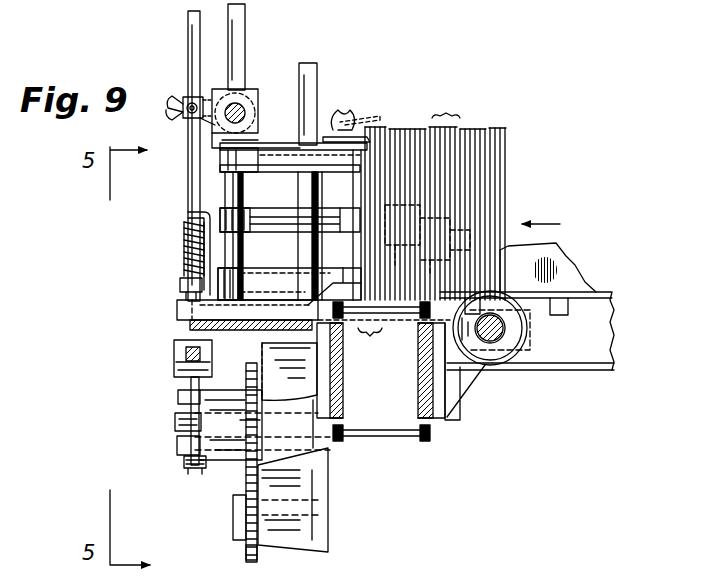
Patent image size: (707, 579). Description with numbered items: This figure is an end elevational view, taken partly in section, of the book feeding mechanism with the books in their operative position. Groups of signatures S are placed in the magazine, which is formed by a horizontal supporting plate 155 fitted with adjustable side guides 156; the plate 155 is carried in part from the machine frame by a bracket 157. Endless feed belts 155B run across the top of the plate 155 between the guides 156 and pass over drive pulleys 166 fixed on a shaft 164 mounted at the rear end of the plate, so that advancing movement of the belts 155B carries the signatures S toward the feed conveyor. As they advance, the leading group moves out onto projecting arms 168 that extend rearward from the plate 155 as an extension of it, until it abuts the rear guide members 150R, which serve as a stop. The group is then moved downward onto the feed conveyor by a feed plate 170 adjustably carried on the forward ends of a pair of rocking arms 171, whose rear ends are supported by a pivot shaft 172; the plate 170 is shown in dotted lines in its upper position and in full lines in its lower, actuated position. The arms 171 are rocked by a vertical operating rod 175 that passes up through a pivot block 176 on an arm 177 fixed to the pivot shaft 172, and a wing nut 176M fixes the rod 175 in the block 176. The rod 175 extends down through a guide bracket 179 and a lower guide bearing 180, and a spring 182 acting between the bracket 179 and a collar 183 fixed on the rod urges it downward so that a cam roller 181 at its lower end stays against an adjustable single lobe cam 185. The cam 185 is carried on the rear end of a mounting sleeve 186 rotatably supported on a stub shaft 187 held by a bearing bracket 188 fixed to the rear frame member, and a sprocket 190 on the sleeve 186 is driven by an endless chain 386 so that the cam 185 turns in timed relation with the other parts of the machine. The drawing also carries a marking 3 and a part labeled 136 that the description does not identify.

The vertical operating rod 175 is at (188, 40).
The pivot shaft 172 is at (240, 100).
The pivot block 176 is at (184, 97).
The arm 177 is at (205, 97).
The wing nut 176M is at (176, 116).
The rocking arms 171 is at (279, 140).
The feed plate 170 is at (362, 120).
The rear guide members 150R is at (352, 172).
The guide bracket 179 is at (186, 212).
The spring 182 is at (186, 246).
The collar 183 is at (178, 284).
The lower guide bearing 180 is at (176, 306).
The signatures S is at (495, 124).
The section indicator 3 is at (409, 224).
The horizontal supporting plate 155 is at (608, 296).
The endless feed belts 155B is at (540, 370).
The adjustable side guides 156 is at (552, 270).
The drive pulleys 166 is at (512, 323).
The shaft 164 is at (500, 338).
The bracket 157 is at (472, 388).
The projecting arms 168 is at (408, 322).
The tie bolt 136 is at (424, 442).
The cam roller 181 is at (186, 378).
The adjustable single lobe cam 185 is at (176, 426).
The stub shaft 187 is at (180, 447).
The mounting sleeve 186 is at (207, 470).
The sprocket 190 is at (246, 468).
The bearing bracket 188 is at (325, 482).
The endless chain 386 is at (246, 554).